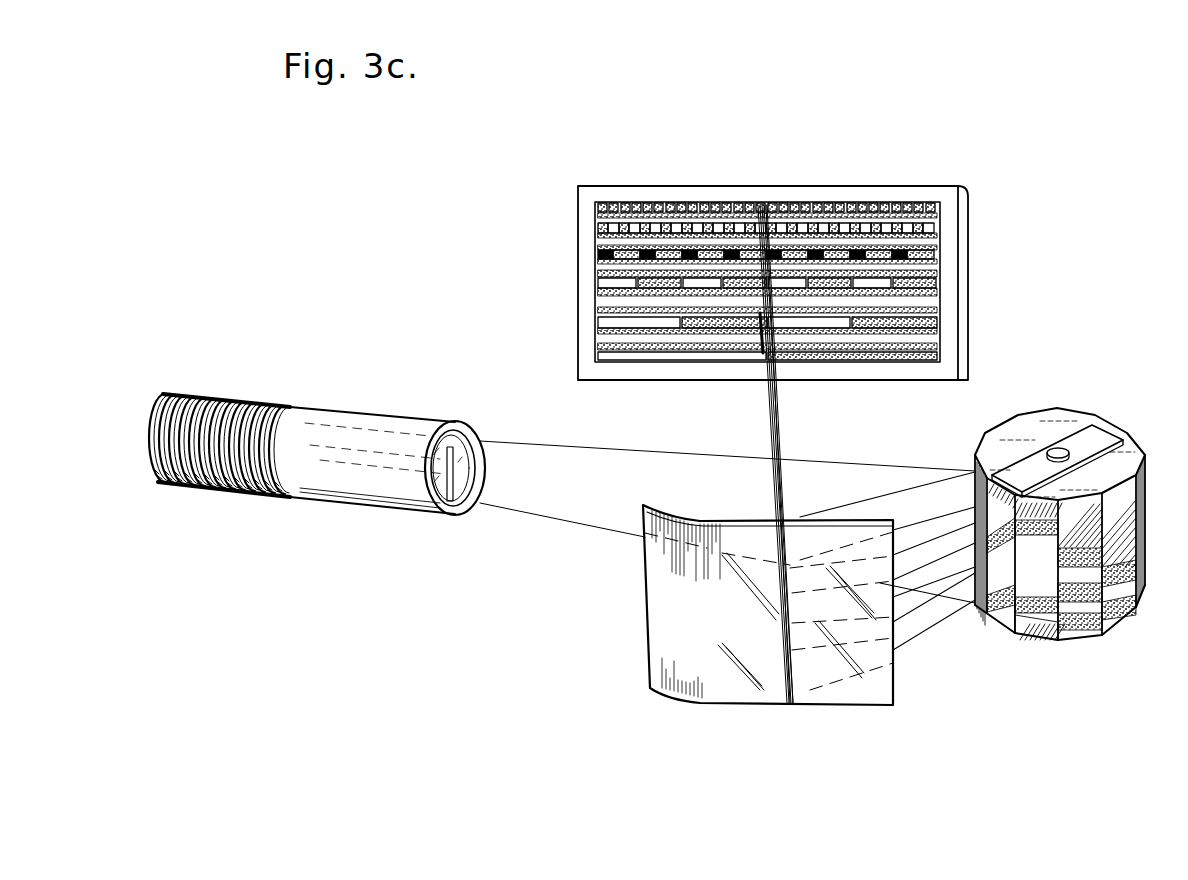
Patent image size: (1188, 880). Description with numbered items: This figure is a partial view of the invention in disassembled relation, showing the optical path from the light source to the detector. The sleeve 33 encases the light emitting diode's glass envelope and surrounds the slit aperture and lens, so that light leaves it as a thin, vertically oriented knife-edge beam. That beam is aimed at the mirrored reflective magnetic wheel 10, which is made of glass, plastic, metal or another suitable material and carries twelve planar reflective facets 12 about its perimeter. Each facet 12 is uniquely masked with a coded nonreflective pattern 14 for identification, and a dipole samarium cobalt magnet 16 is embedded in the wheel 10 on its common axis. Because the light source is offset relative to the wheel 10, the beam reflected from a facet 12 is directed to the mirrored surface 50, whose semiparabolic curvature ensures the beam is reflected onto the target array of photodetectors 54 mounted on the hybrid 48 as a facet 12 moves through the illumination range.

The mirrored reflective magnetic wheel 10 is at (1062, 524).
The planar reflective facet 12 is at (1035, 633).
The coded nonreflective pattern 14 is at (1089, 637).
The dipole samarium cobalt magnet 16 is at (1107, 435).
The sleeve 33 is at (332, 503).
The hybrid 48 is at (973, 268).
The mirrored surface 50 is at (894, 650).
The target array of photodetectors 54 is at (943, 212).